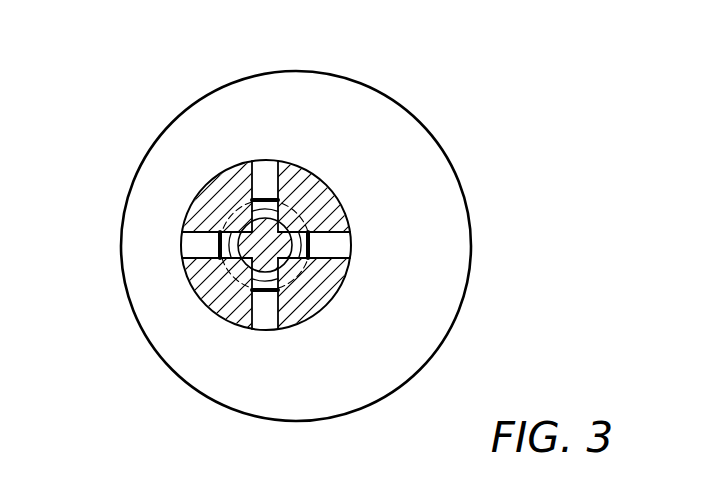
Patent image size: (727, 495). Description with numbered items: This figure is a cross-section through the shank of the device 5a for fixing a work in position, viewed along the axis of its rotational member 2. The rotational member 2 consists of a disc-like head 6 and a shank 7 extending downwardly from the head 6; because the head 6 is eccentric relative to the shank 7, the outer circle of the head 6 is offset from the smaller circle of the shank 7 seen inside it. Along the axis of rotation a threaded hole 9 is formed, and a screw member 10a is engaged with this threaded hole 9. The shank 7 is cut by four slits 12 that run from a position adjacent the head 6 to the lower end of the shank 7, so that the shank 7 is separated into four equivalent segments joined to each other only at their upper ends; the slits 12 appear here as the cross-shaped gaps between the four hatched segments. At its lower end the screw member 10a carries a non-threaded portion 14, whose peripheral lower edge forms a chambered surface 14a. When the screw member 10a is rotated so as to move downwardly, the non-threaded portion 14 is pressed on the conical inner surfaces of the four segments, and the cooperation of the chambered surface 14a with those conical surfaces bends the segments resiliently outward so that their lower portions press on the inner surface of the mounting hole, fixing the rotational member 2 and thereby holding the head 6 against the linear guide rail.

The rotational member 2 is at (210, 132).
The device for fixing a work in position 5a is at (117, 158).
The disc-like head 6 is at (389, 115).
The shank 7 is at (337, 291).
The threaded hole 9 is at (268, 293).
The screw member 10a is at (284, 297).
The slits 12 is at (278, 172).
The non-threaded portion 14 is at (237, 270).
The chambered surface 14a is at (307, 253).